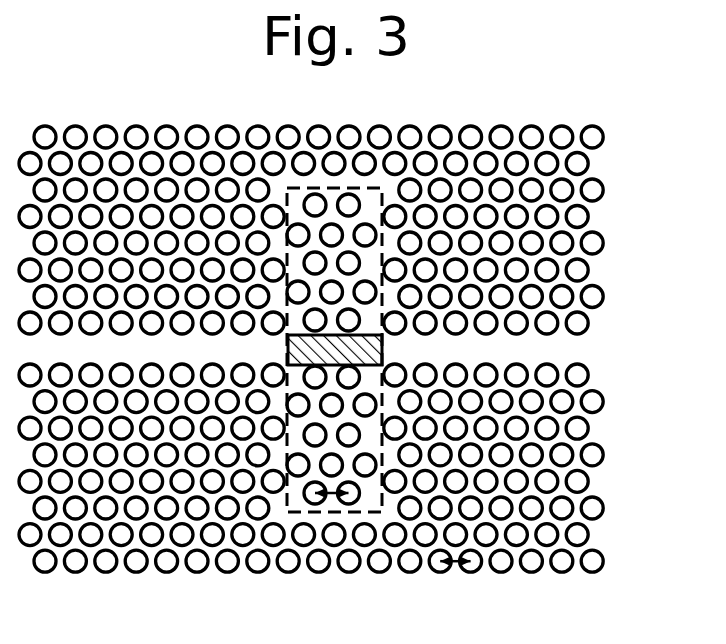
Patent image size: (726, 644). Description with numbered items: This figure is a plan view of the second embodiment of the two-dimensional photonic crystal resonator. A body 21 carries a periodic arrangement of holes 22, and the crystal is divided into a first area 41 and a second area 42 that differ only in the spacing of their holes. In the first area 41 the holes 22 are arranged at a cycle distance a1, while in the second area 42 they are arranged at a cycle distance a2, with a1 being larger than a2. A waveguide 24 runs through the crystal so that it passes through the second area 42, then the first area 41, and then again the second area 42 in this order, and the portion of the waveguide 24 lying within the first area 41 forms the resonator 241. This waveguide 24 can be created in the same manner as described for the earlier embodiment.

The body 21 is at (343, 360).
The hole 22 is at (594, 242).
The waveguide 24 is at (477, 458).
The resonator 241 is at (348, 345).
The first area 41 is at (381, 197).
The second area 42 is at (341, 328).
The cycle distance of the holes in the first area a1 is at (340, 500).
The cycle distance of the holes in the second area a2 is at (470, 567).